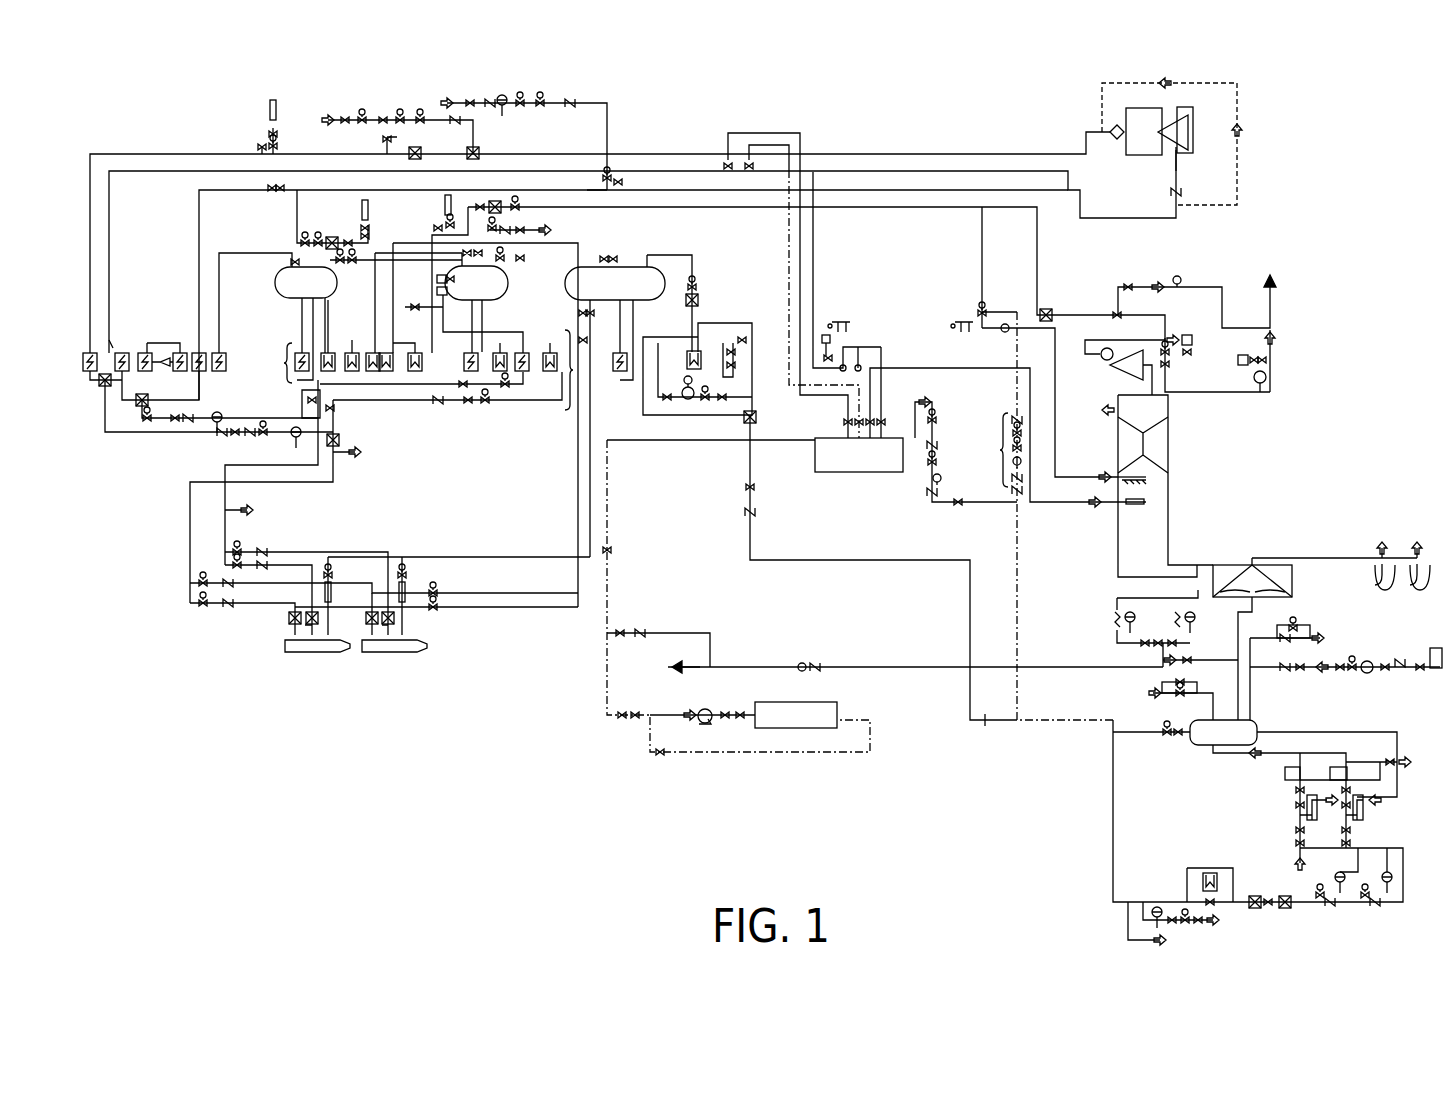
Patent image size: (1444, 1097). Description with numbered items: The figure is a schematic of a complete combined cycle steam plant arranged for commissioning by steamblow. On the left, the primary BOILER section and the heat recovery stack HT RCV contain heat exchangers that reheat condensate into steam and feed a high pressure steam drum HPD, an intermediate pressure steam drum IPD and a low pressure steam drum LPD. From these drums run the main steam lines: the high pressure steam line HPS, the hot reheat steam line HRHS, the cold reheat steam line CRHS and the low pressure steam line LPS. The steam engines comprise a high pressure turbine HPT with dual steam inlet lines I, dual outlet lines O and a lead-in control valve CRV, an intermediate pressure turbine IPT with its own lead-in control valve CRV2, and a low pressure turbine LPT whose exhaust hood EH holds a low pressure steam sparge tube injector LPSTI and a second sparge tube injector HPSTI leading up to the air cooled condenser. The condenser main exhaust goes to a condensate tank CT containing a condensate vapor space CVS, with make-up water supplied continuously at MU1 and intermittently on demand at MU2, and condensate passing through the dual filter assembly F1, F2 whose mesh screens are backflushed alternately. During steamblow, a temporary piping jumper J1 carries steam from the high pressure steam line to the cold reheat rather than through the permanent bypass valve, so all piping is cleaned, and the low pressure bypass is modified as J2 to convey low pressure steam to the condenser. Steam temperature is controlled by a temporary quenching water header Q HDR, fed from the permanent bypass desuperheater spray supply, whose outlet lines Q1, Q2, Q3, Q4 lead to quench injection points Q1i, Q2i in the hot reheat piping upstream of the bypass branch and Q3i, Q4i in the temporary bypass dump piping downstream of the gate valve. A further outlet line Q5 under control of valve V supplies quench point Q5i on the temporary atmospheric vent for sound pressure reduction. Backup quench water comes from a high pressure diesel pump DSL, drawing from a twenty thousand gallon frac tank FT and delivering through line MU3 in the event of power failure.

The high pressure steam line HPS is at (840, 154).
The hot reheat steam line HRHS is at (938, 171).
The cold reheat steam line CRHS is at (843, 190).
The low pressure steam line LPS is at (935, 207).
The lead-in control valve CRV is at (1110, 130).
The control valve (IPT) CRV2 is at (1100, 350).
The dual steam inlet lines I is at (1148, 108).
The high pressure turbine HPT is at (1172, 148).
The dual outlet lines O is at (1195, 130).
The temporary piping jumper J1 is at (1238, 118).
The modified low pressure steam bypass J2 is at (1199, 285).
The intermediate pressure turbine IPT is at (1118, 370).
The low pressure turbine LPT is at (1168, 437).
The exhaust hood EH is at (1168, 480).
The low pressure steam sparge tube injector LPSTI is at (1125, 480).
The high pressure steam turbine inlet HPSTI is at (1118, 505).
The make-up water inlet MU1 is at (1258, 640).
The make-up water inlet MU2 is at (1153, 692).
The backup quench supply line MU3 is at (608, 587).
The condensate vapor space CVS is at (1255, 723).
The condensate tank CT is at (1200, 745).
The filter F1 is at (1375, 820).
The filter F2 is at (1278, 828).
The primary boiler section BOILER is at (336, 478).
The high pressure steam drum HPD is at (292, 300).
The intermediate pressure steam drum IPD is at (500, 300).
The low pressure steam drum LPD is at (608, 267).
The heat recovery stack HT RCV is at (402, 355).
The quench injection point Q1i is at (725, 168).
The quench injection point Q2i is at (748, 165).
The quench injection point Q3i is at (862, 365).
The quench injection point Q4i is at (845, 365).
The quench point Q5i is at (1003, 332).
The quench outlet line Q1 is at (790, 392).
The quench outlet line Q2 is at (815, 404).
The quench outlet line Q3 is at (873, 405).
The quench outlet line Q4 is at (884, 382).
The quench water outlet line Q5 is at (1017, 587).
The quenching water header Q HDR is at (812, 451).
The valve V is at (998, 453).
The high pressure diesel pump DSL is at (713, 715).
The frac tank FT is at (837, 707).